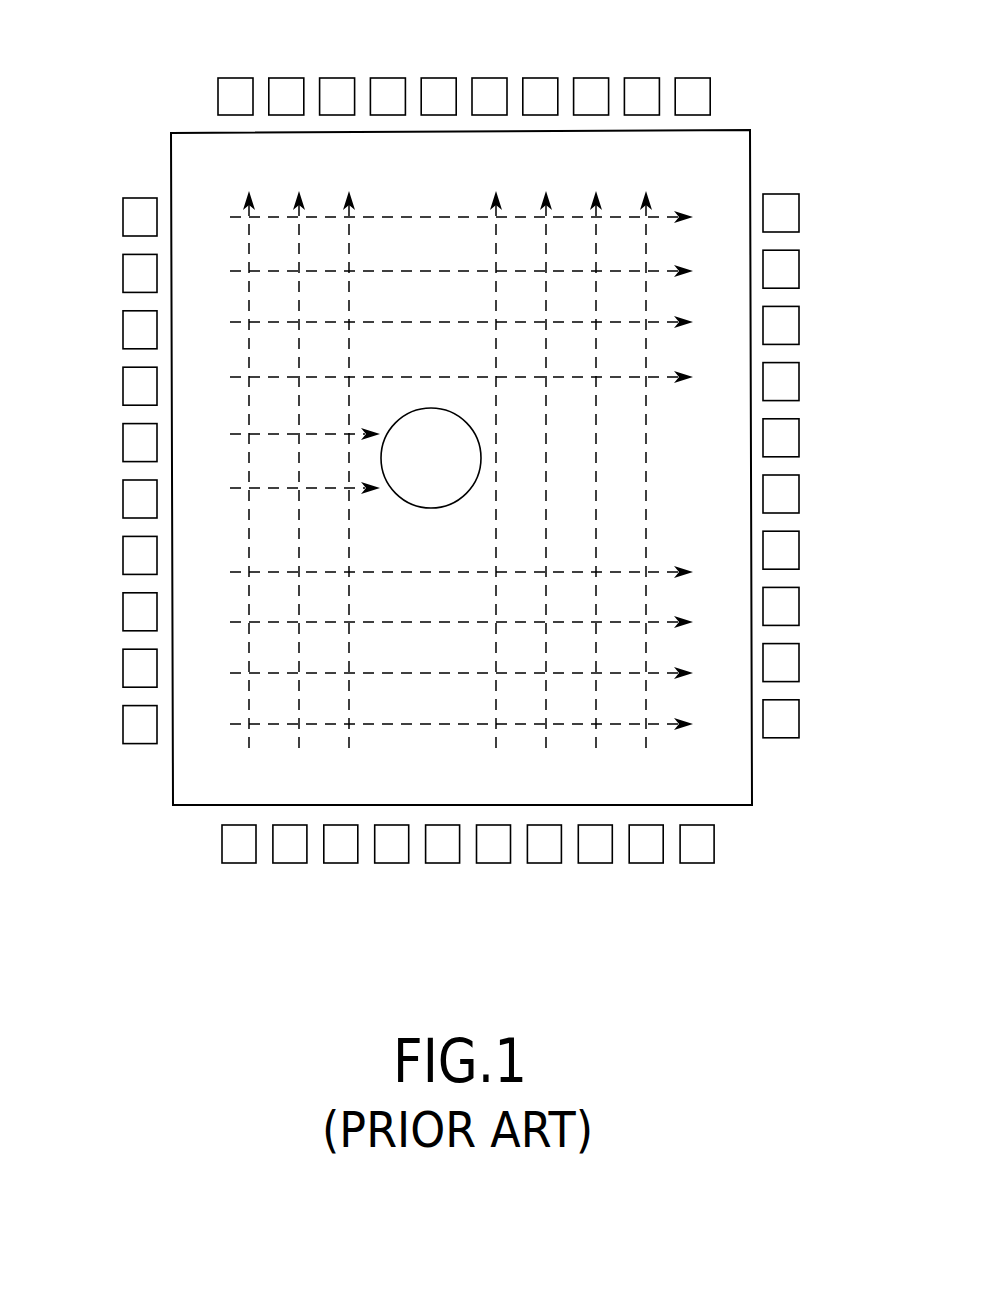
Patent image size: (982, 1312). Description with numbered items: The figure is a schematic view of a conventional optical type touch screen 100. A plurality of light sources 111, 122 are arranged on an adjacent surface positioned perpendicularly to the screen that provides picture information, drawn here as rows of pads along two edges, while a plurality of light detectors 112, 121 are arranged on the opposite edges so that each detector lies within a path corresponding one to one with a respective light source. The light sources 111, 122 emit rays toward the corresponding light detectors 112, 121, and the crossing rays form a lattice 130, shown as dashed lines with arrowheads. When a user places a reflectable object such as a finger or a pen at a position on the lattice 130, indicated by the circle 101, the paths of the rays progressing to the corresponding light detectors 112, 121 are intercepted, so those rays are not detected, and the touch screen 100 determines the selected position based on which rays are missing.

The conventional touch screen 100 is at (176, 822).
The touch point 101 is at (432, 460).
The light sources 111 is at (102, 202).
The light detectors 112 is at (707, 62).
The light detectors 121 is at (821, 195).
The light sources 122 is at (712, 872).
The lattice of rays 130 is at (662, 723).